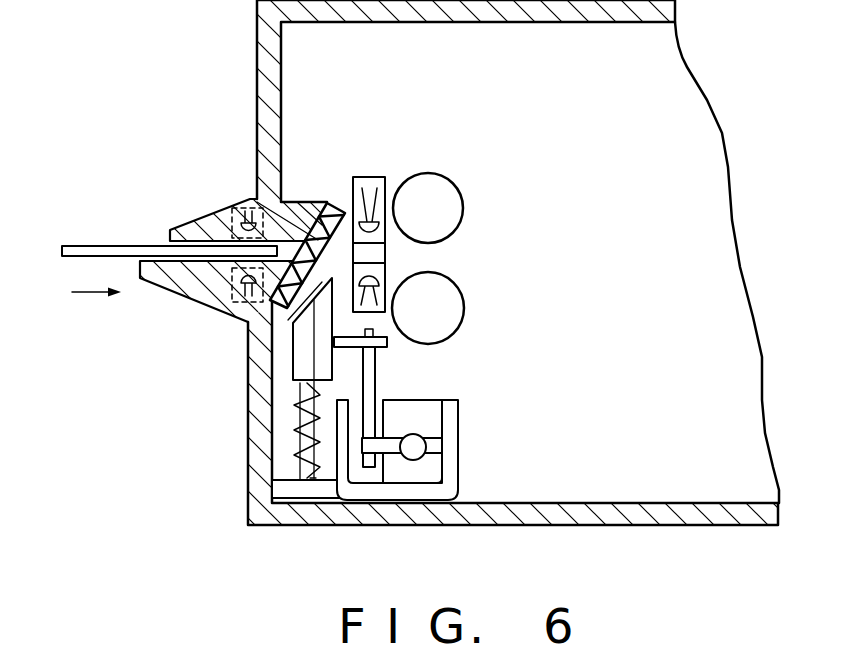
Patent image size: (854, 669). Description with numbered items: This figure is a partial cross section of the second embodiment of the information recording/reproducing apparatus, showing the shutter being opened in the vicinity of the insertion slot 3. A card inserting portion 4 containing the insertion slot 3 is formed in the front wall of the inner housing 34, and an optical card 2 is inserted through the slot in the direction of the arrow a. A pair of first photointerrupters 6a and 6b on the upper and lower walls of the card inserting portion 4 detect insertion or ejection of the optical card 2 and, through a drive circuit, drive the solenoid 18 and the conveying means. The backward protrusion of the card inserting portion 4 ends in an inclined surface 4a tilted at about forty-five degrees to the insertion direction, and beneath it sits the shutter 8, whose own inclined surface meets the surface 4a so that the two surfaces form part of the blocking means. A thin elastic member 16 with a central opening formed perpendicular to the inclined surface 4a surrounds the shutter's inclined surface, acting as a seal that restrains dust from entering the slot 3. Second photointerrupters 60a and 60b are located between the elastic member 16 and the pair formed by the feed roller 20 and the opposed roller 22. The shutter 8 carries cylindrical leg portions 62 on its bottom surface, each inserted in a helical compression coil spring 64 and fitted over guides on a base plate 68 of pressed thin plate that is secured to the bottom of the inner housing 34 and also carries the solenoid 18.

The inner housing 34 is at (257, 57).
The card inserting portion 4 is at (188, 222).
The inclined surface 4a is at (313, 202).
The photointerrupter 6a is at (241, 207).
The photointerrupter 6b is at (236, 300).
The optical card 2 is at (70, 246).
The insertion slot 3 is at (148, 233).
The arrow a is at (96, 305).
The elastic member 16 is at (274, 333).
The shutter 8 is at (293, 356).
The coil spring 64 is at (298, 421).
The leg portion 62 is at (325, 500).
The base plate 68 is at (418, 492).
The solenoid 18 is at (427, 418).
The photointerrupter 60a is at (371, 177).
The photointerrupter 60b is at (385, 313).
The opposed roller 22 is at (441, 173).
The feed roller 20 is at (465, 322).